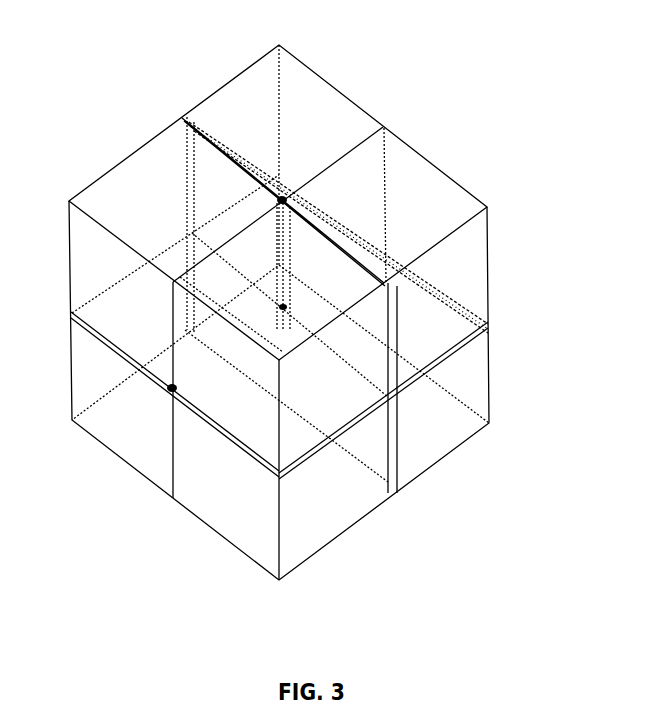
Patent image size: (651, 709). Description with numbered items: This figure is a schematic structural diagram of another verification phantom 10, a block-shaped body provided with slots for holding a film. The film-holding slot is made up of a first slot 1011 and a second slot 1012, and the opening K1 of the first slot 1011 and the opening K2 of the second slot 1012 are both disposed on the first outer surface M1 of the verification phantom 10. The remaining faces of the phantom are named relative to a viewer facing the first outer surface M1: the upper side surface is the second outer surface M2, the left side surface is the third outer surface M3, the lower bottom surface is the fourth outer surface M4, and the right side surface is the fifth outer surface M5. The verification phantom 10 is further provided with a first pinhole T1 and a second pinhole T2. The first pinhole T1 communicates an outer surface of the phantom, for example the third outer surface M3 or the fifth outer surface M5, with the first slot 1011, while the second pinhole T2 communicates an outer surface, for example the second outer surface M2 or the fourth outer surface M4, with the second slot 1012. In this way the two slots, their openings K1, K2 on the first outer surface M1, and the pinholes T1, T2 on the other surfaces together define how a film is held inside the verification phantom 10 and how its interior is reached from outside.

The verification phantom 10 is at (472, 204).
The first outer surface M1 is at (477, 279).
The second outer surface M2 is at (221, 106).
The third outer surface M3 is at (145, 449).
The fourth outer surface M4 is at (428, 445).
The fifth outer surface M5 is at (410, 200).
The opening of the first slot K1 is at (405, 357).
The opening of the second slot K2 is at (406, 458).
The first pinhole T1 is at (172, 390).
The second pinhole T2 is at (282, 200).
The first slot 1011 is at (380, 485).
The second slot 1012 is at (254, 473).